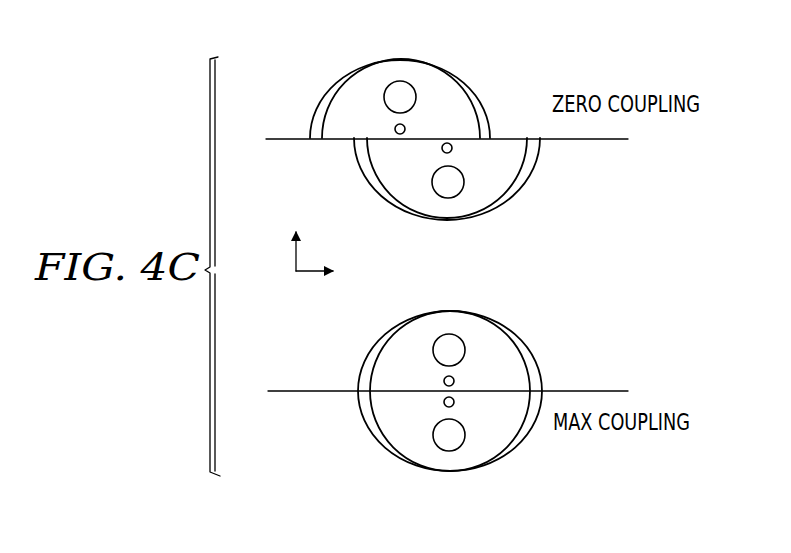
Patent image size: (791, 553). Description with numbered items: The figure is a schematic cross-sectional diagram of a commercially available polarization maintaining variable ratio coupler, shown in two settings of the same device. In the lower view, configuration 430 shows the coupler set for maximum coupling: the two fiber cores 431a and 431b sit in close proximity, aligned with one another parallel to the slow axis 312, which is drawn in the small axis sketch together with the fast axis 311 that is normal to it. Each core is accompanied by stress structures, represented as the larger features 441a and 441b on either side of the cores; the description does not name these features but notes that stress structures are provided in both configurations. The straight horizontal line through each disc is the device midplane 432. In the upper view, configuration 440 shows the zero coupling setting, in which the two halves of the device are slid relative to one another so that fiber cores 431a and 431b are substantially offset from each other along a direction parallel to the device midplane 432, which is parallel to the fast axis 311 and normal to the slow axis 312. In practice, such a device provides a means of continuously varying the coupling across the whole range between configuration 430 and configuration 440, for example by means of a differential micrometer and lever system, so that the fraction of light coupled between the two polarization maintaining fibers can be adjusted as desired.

The zero coupling configuration 440 is at (476, 58).
The maximum coupling configuration 430 is at (521, 473).
The device midplane 432 is at (290, 142).
The first large hole 441a is at (400, 81).
The second large hole 441b is at (448, 198).
The fiber core 431a is at (394, 128).
The fiber core 431b is at (453, 148).
The slow axis 312 is at (295, 253).
The fast axis 311 is at (310, 275).